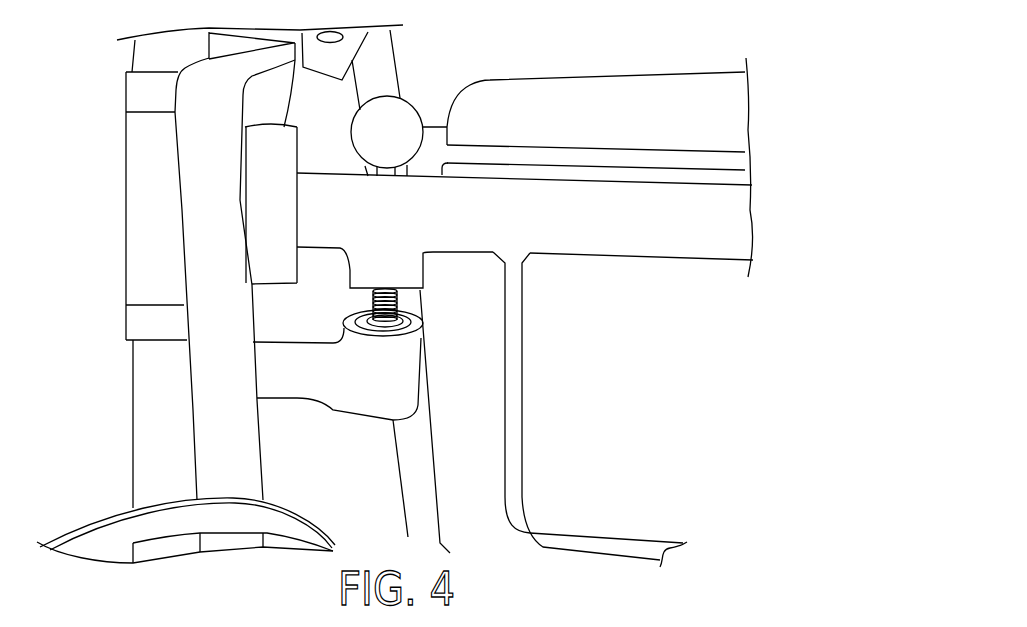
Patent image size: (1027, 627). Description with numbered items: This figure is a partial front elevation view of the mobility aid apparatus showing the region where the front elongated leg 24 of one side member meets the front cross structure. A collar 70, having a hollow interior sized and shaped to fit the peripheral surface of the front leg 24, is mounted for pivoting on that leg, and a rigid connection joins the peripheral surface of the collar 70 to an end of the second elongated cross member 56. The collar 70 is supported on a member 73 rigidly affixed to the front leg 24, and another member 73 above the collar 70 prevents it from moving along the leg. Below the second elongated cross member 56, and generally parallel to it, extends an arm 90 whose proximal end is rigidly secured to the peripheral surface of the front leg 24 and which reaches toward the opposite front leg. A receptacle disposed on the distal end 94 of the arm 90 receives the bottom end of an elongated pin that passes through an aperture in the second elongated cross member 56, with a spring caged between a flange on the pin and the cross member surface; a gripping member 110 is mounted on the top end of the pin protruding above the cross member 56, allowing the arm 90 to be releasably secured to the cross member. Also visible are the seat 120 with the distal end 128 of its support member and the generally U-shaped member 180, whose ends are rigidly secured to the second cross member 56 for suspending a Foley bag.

The front elongated leg 24 is at (152, 420).
The second elongated cross member 56 is at (617, 220).
The collar 70 is at (147, 188).
The member 73 is at (150, 94).
The arm 90 is at (298, 375).
The distal end 94 is at (382, 413).
The gripping member 110 is at (397, 123).
The seat 120 is at (613, 72).
The distal end 128 is at (436, 138).
The generally U-shaped member 180 is at (513, 468).